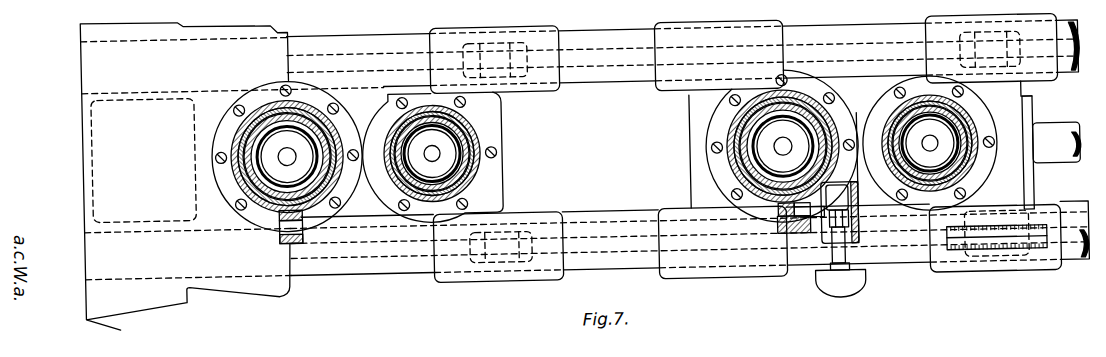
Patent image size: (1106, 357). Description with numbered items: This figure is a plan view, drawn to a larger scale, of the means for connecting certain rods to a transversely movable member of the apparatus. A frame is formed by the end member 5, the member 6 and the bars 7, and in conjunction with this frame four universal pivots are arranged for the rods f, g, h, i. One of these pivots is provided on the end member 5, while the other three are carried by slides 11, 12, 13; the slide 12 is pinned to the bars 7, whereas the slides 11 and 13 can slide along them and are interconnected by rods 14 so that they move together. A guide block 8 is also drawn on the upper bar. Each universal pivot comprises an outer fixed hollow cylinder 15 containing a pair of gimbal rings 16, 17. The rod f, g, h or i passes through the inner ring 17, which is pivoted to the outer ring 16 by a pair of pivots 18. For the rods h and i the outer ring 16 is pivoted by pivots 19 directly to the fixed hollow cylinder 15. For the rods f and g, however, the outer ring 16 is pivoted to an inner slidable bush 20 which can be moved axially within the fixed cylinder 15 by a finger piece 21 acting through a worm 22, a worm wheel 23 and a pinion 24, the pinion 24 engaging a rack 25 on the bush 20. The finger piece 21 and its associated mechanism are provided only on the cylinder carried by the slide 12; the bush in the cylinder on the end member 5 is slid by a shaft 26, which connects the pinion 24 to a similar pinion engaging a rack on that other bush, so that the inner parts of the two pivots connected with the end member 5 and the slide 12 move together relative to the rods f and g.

The end member 5 is at (283, 43).
The frame member 6 is at (940, 137).
The bars 7 is at (580, 31).
The guide block 8 is at (726, 139).
The slide 11 is at (461, 25).
The slide 12 is at (698, 100).
The slide 13 is at (1014, 121).
The rods 14 is at (613, 50).
The outer fixed hollow cylinder 15 is at (345, 145).
The outer gimbal ring 16 is at (242, 159).
The inner gimbal ring 17 is at (242, 179).
The pivots 18 is at (248, 120).
The pivots 19 is at (340, 141).
The slidable bush 20 is at (233, 132).
The finger piece 21 is at (857, 293).
The worm 22 is at (859, 205).
The worm wheel 23 is at (848, 232).
The pinion 24 is at (295, 239).
The rack 25 is at (279, 206).
The shaft 26 is at (609, 212).
The rod f is at (270, 153).
The rod g is at (730, 155).
The rod h is at (480, 160).
The rod i is at (950, 139).